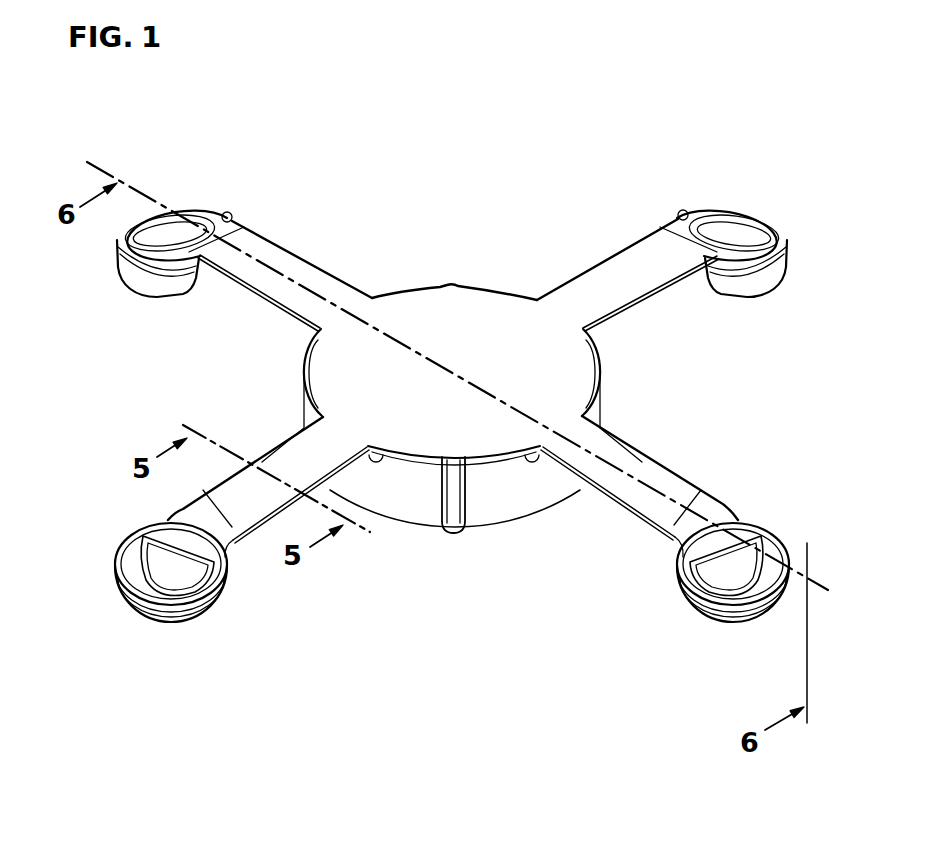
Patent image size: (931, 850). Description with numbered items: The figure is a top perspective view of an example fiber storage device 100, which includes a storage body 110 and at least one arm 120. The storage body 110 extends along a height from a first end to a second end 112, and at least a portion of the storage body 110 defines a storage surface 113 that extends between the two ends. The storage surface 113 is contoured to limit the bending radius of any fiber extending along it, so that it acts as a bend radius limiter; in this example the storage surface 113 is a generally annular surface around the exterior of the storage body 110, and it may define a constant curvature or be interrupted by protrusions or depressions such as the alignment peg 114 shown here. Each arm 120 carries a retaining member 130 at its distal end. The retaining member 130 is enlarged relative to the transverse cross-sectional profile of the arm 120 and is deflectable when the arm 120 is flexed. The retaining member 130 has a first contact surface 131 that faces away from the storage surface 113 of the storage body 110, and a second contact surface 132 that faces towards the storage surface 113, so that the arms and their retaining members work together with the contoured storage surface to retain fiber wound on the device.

The fiber storage device 100 is at (503, 262).
The storage body 110 is at (404, 537).
The second end 112 is at (521, 361).
The storage surface 113 is at (503, 500).
The alignment peg 114 is at (455, 530).
The arm 120 is at (313, 257).
The retaining member 130 is at (108, 538).
The first contact surface 131 is at (140, 612).
The second contact surface 132 is at (182, 273).